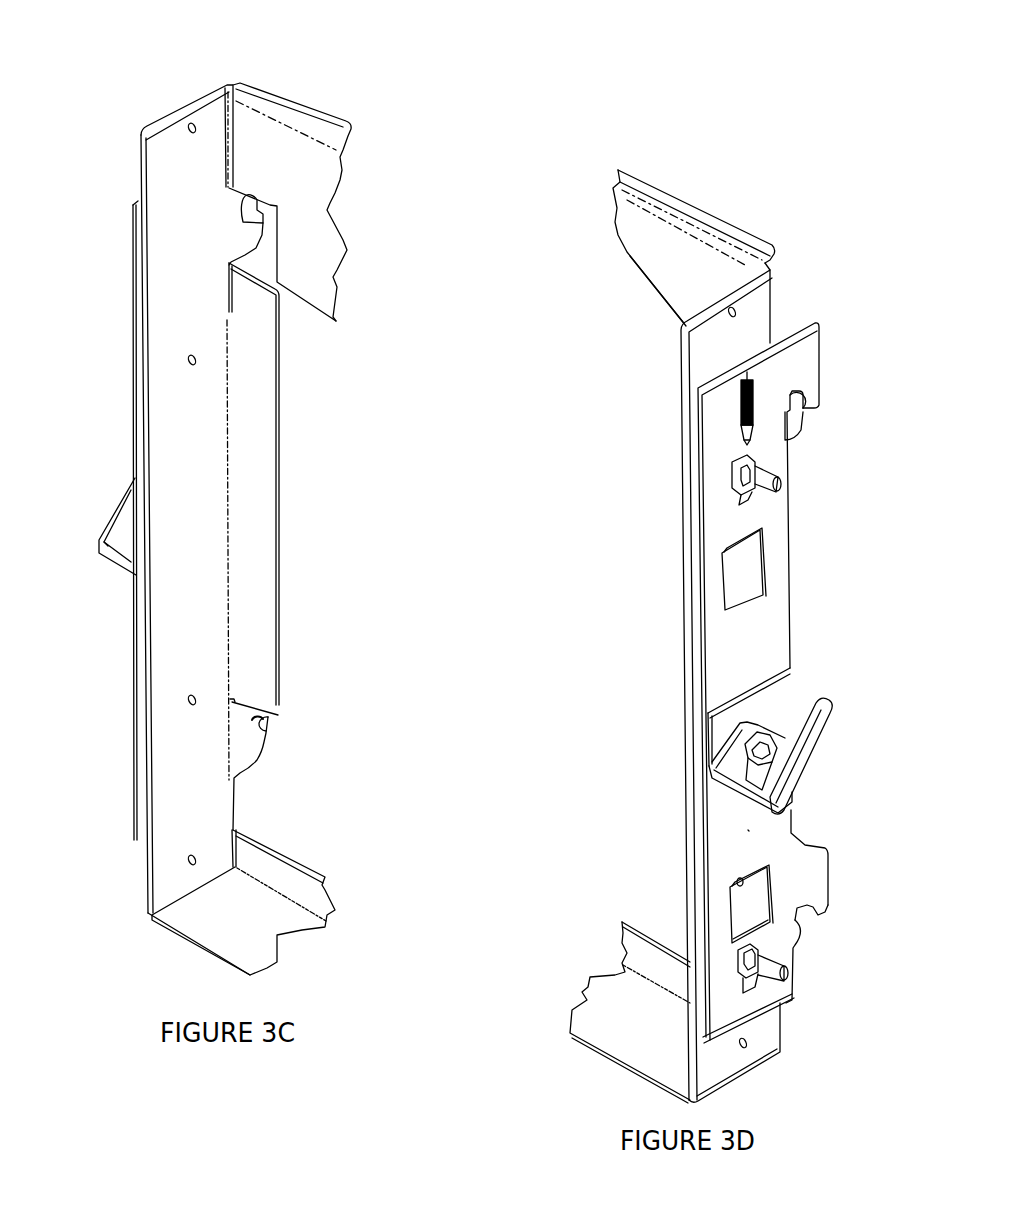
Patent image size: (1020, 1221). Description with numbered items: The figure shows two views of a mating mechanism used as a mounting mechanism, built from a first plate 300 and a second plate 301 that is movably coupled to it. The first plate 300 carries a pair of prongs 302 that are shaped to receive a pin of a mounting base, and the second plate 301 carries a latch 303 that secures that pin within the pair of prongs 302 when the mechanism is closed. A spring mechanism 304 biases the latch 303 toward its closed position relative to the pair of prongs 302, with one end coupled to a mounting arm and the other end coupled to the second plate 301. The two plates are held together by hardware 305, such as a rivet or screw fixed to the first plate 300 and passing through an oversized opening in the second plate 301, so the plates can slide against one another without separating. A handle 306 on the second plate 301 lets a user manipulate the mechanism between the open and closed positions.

In FIG. 3C, the first plate 300 is at (165, 337).
In FIG. 3D, the first plate 300 is at (681, 336).
In FIG. 3C, the second plate 301 is at (133, 206).
In FIG. 3D, the second plate 301 is at (796, 326).
In FIG. 3C, the pair of prongs 302 is at (262, 735).
In FIG. 3D, the latch 303 is at (831, 921).
In FIG. 3D, the spring mechanism 304 is at (737, 413).
In FIG. 3D, the hardware 305 is at (788, 482).
In FIG. 3D, the handle 306 is at (818, 733).